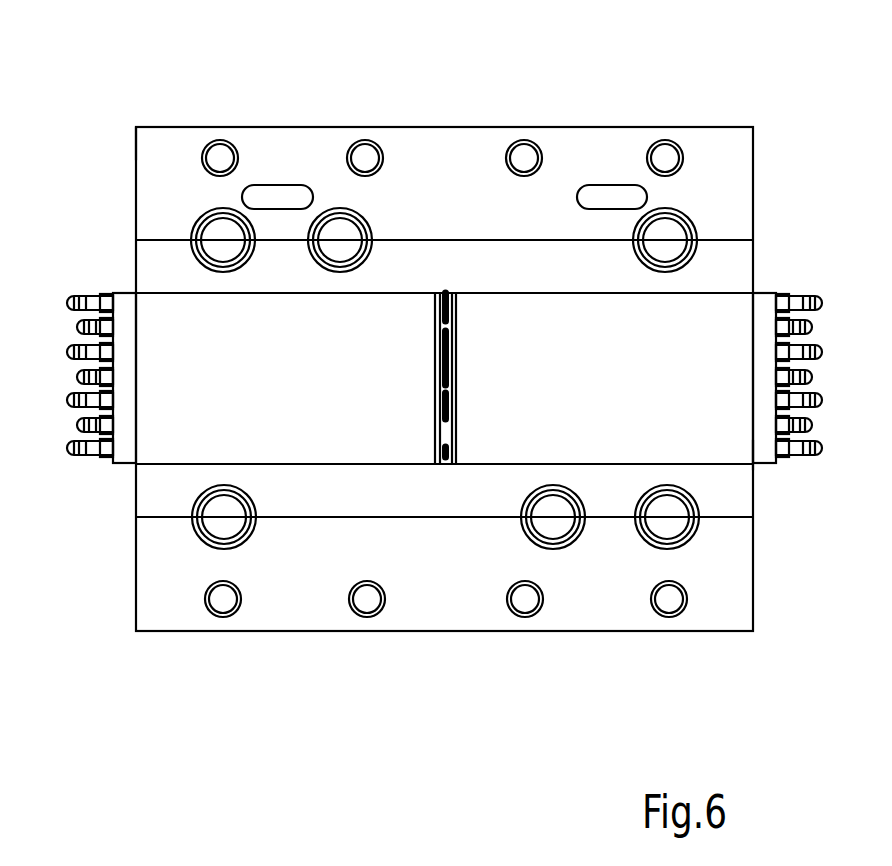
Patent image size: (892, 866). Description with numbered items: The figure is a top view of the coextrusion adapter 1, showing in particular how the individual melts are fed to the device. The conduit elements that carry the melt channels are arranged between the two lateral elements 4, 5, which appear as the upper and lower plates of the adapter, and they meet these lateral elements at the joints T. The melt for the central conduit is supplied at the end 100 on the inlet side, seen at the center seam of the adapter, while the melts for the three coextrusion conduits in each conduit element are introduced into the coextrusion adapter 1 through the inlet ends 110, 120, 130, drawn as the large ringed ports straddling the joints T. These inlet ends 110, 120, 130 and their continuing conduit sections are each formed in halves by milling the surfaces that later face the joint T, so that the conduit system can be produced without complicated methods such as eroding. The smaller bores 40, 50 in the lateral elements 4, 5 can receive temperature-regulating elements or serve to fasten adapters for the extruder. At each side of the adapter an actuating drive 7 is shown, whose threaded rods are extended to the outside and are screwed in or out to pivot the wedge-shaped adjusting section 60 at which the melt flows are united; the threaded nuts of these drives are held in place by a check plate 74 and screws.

The coextrusion adapter 1 is at (120, 104).
The lateral element 4 is at (282, 632).
The lateral element 5 is at (610, 127).
The actuating drive 7 is at (104, 284).
The bore 40 is at (369, 617).
The bore 50 is at (369, 140).
The adjusting section 60 is at (449, 377).
The check plate 74 is at (764, 454).
The end at the inlet side of the central conduit 100 is at (448, 293).
The inlet end 110 is at (336, 210).
The inlet end 120 is at (212, 214).
The inlet end 130 is at (685, 218).
The joint T is at (540, 240).